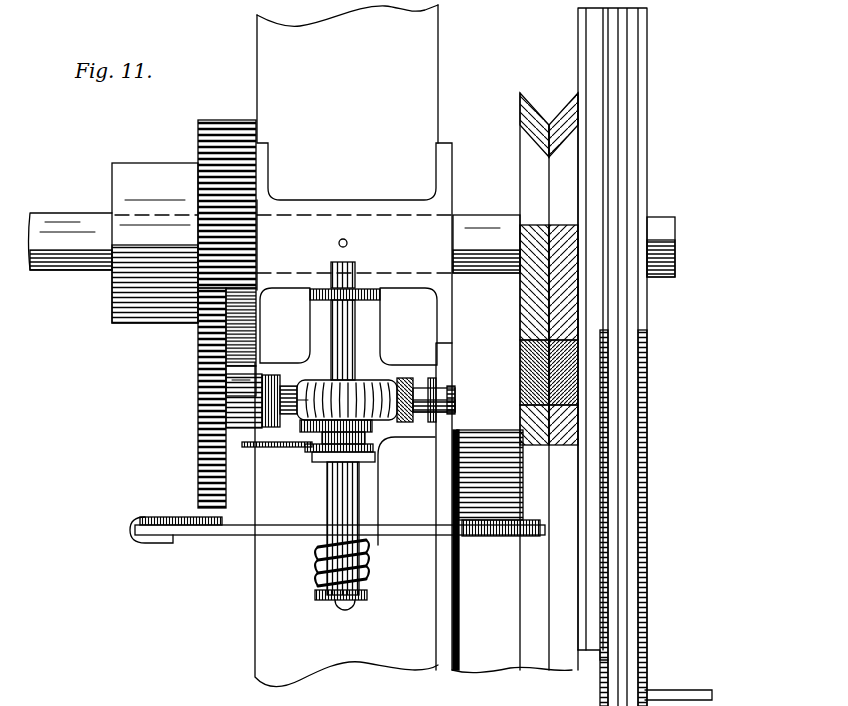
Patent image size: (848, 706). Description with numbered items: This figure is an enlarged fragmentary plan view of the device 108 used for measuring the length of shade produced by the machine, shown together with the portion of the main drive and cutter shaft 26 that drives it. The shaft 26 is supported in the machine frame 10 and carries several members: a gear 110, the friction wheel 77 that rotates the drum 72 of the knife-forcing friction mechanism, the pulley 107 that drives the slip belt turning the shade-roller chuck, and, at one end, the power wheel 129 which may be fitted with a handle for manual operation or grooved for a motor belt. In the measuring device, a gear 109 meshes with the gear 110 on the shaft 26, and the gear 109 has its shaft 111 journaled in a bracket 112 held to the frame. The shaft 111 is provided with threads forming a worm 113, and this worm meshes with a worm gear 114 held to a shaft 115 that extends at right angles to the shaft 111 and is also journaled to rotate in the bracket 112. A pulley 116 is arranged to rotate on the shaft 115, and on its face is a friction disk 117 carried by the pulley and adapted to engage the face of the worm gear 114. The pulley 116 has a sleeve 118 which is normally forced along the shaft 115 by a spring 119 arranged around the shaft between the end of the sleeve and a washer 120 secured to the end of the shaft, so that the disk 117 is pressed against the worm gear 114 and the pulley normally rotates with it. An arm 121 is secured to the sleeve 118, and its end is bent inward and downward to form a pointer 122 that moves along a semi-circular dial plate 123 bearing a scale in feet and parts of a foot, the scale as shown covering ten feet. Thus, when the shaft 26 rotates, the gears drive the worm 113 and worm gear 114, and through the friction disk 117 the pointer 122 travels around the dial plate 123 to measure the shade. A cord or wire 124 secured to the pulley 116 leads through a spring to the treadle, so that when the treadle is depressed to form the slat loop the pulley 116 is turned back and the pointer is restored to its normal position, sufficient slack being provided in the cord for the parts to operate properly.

The frame 10 is at (340, 688).
The main drive shaft 26 is at (58, 217).
The drum 72 is at (497, 650).
The friction wheel 77 is at (527, 93).
The pulley 107 is at (578, 30).
The measuring device 108 is at (155, 280).
The gear 109 is at (197, 447).
The gear 110 is at (222, 125).
The shaft 111 is at (418, 401).
The bracket 112 is at (380, 494).
The worm 113 is at (401, 392).
The worm gear 114 is at (312, 385).
The shaft 115 is at (356, 268).
The pulley 116 is at (308, 458).
The friction disk 117 is at (372, 430).
The sleeve 118 is at (338, 510).
The spring 119 is at (368, 566).
The washer 120 is at (358, 601).
The arm 121 is at (176, 518).
The pointer 122 is at (160, 543).
The dial plate 123 is at (232, 536).
The cord or wire 124 is at (270, 448).
The wheel 129 is at (640, 368).